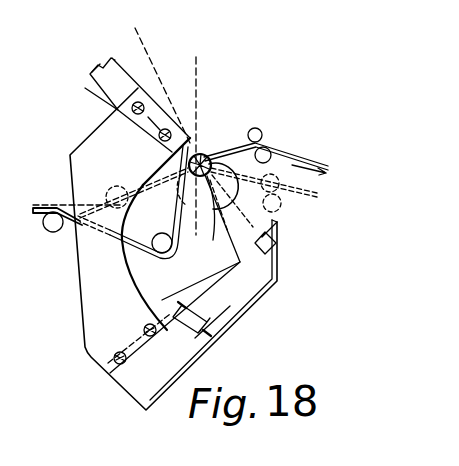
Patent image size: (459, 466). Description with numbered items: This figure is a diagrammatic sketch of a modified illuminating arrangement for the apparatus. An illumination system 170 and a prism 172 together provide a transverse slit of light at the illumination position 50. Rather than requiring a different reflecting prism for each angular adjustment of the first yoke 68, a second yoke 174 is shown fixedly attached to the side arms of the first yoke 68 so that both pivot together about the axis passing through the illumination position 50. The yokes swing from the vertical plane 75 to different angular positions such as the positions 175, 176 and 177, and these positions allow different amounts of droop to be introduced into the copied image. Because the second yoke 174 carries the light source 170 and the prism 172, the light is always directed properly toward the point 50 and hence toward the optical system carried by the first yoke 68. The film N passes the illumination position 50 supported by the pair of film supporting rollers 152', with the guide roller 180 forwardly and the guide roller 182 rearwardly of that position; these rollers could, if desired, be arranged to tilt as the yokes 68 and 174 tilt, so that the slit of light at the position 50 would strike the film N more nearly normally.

The yoke 68 is at (115, 58).
The position 176 is at (93, 55).
The position 175 is at (71, 80).
The position 177 is at (136, 30).
The vertical plane 75 is at (197, 79).
The illumination position 50 is at (207, 154).
The guide roller 182 is at (268, 147).
The film N is at (302, 153).
The guide roller 180 is at (163, 233).
The film supporting rollers 152' is at (239, 234).
The prism 172 is at (276, 232).
The second yoke 174 is at (90, 307).
The illumination system 170 is at (200, 337).